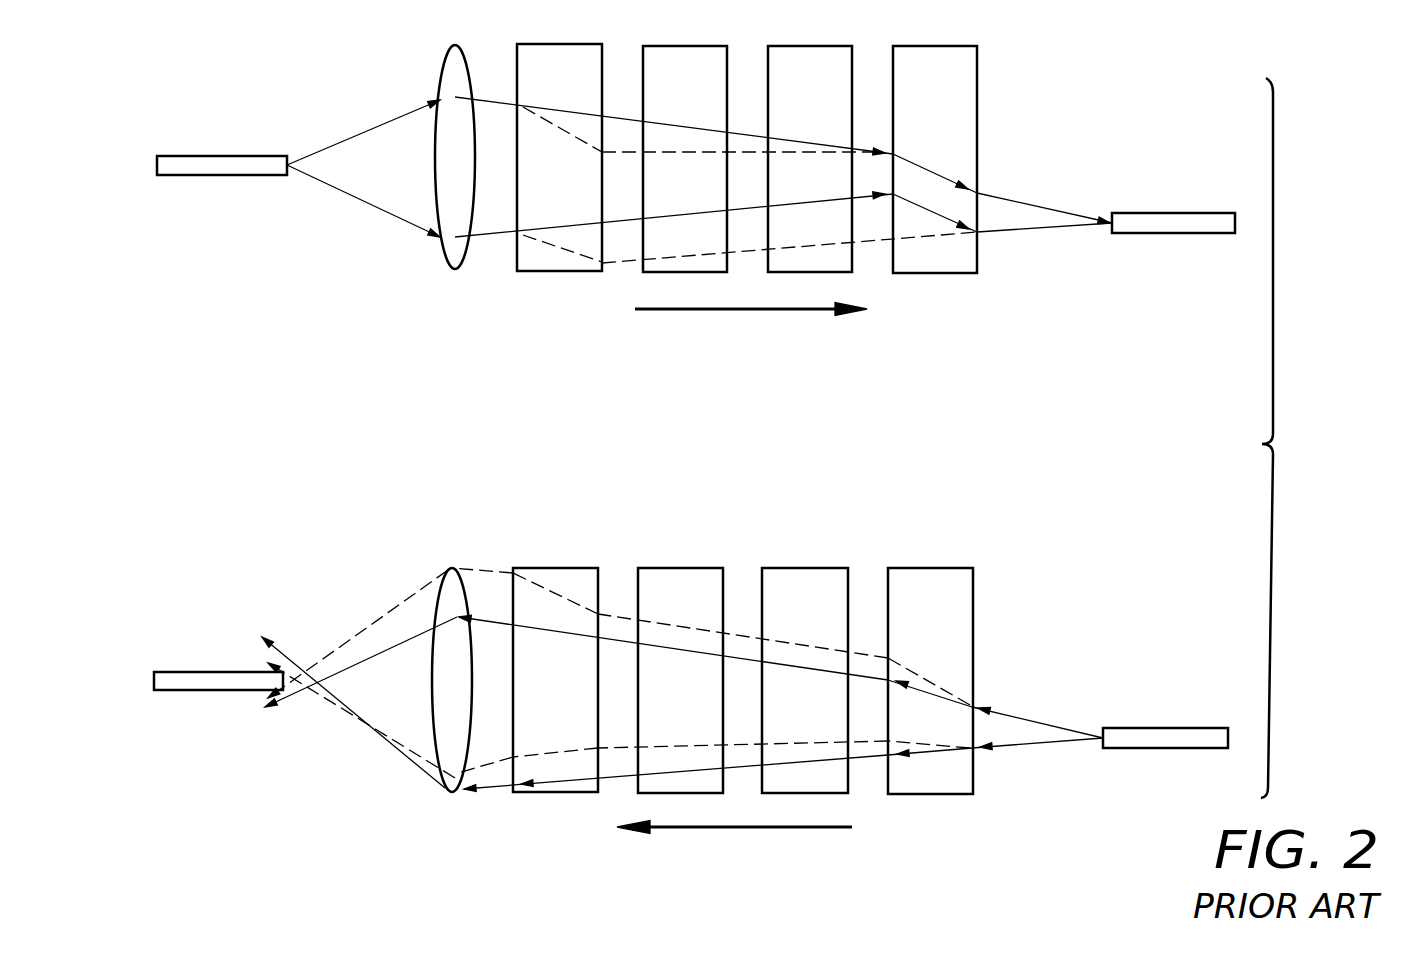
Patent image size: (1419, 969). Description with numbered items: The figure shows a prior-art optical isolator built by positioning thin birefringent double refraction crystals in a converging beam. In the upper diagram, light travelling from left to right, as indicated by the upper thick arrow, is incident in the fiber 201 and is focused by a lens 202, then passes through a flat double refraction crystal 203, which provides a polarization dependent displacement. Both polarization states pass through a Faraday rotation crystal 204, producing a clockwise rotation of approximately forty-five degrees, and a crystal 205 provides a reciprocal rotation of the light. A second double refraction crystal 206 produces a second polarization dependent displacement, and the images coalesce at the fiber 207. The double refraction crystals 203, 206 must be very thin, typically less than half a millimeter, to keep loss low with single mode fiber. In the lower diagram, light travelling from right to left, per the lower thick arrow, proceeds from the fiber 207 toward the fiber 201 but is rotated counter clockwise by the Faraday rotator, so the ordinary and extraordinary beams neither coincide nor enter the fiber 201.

The fiber 201 is at (228, 178).
The lens 202 is at (455, 268).
The flat double refraction crystal 203 is at (557, 272).
The Faraday rotation crystal 204 is at (653, 273).
The crystal 205 is at (843, 273).
The second double refraction crystal 206 is at (933, 273).
The fiber 207 is at (1173, 233).